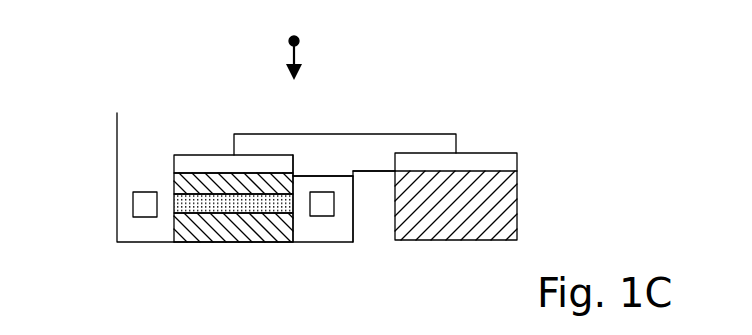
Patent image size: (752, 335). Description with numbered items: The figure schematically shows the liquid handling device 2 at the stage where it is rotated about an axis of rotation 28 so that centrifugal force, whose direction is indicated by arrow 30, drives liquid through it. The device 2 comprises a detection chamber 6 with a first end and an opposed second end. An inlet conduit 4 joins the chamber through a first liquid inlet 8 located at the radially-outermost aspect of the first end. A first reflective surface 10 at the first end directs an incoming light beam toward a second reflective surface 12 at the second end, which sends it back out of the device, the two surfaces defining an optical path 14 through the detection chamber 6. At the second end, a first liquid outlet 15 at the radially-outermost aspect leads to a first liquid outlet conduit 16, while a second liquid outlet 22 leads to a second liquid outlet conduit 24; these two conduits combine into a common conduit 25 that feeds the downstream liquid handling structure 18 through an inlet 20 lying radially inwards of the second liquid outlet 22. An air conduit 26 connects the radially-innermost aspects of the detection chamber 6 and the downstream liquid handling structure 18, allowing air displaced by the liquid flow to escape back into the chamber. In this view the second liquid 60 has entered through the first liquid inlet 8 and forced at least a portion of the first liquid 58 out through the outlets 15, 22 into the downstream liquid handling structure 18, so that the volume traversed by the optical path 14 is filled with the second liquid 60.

The liquid handling device 2 is at (176, 73).
The inlet conduit 4 is at (117, 165).
The detection chamber 6 is at (200, 155).
The first liquid inlet 8 is at (177, 242).
The reflective surface 10 is at (139, 190).
The reflective surface 12 is at (332, 217).
The optical path 14 is at (220, 205).
The first liquid outlet 15 is at (293, 242).
The first liquid outlet conduit 16 is at (347, 242).
The downstream liquid handling structure 18 is at (517, 207).
The inlet 20 is at (393, 173).
The second liquid outlet 22 is at (296, 176).
The second liquid outlet conduit 24 is at (333, 176).
The common conduit 25 is at (367, 171).
The air conduit 26 is at (423, 134).
The axis of rotation 28 is at (297, 37).
The arrow 30 is at (298, 53).
The first liquid 58 is at (462, 215).
The second liquid 60 is at (257, 232).